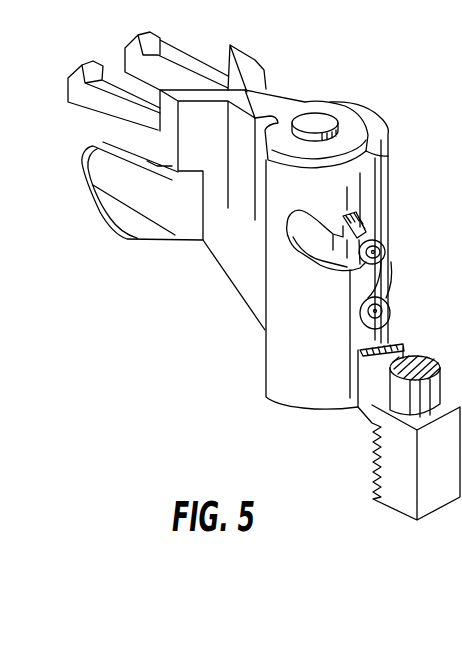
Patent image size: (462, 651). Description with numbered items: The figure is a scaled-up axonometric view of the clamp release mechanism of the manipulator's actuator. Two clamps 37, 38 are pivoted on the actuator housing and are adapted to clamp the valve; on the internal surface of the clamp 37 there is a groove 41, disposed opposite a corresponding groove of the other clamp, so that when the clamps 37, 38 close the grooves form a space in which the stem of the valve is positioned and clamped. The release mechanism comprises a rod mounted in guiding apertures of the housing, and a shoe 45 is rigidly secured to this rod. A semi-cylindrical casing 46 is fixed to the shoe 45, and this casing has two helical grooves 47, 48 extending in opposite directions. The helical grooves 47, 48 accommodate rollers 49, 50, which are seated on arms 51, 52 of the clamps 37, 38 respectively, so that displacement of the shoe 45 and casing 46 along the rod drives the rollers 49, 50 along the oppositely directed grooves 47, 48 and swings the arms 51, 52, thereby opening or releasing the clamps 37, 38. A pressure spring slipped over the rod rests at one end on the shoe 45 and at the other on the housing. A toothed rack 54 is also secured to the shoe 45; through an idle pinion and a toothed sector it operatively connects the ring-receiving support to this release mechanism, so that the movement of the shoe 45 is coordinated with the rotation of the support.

The clamp 37 is at (280, 100).
The clamp 38 is at (243, 98).
The groove 41 is at (102, 145).
The shoe 45 is at (405, 343).
The semi-cylindrical casing 46 is at (373, 178).
The helical groove 47 is at (387, 288).
The helical groove 48 is at (343, 275).
The roller 49 is at (390, 318).
The roller 50 is at (383, 236).
The arm 51 is at (388, 306).
The arm 52 is at (381, 252).
The toothed rack 54 is at (393, 473).